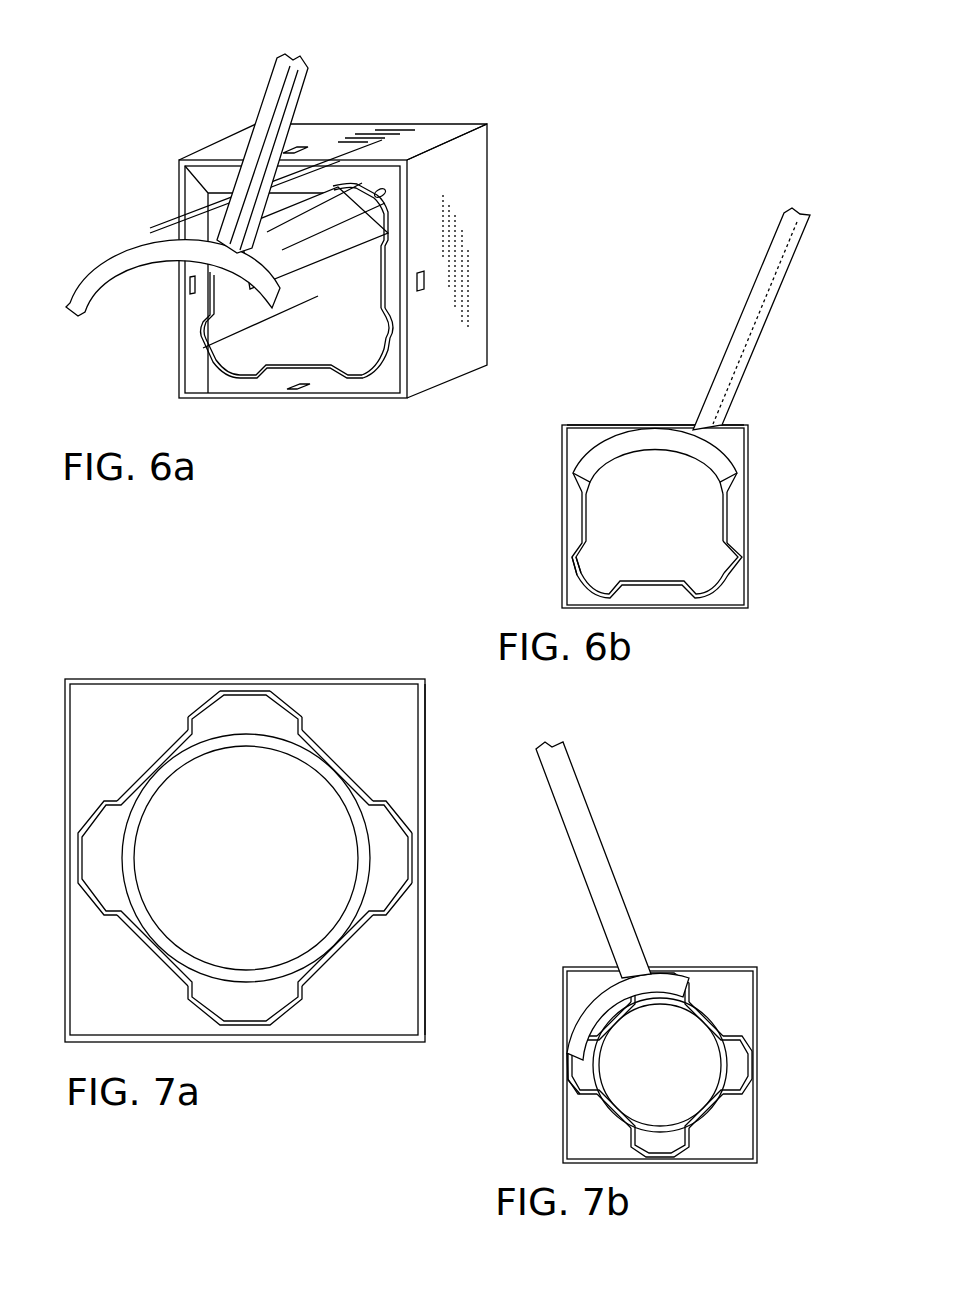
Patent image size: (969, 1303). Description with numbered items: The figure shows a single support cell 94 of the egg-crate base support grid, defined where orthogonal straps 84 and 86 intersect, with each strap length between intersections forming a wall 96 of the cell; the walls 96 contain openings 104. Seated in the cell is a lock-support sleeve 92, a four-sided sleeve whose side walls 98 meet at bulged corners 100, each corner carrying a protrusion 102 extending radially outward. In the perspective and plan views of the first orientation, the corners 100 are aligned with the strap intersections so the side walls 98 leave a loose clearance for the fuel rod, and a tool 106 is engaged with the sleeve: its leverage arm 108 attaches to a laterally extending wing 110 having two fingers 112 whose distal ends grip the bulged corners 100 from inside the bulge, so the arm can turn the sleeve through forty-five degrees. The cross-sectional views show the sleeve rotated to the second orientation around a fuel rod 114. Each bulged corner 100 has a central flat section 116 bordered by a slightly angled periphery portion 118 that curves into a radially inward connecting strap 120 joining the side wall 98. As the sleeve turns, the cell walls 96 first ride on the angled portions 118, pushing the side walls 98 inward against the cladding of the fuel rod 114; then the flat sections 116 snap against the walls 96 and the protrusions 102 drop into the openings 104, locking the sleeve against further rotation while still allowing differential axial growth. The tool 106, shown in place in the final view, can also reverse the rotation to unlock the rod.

In FIG. 6a, the strap 84 is at (353, 253).
In FIG. 6b, the strap 84 is at (622, 485).
In FIG. 7a, the strap 84 is at (289, 860).
In FIG. 6a, the strap 86 is at (363, 133).
In FIG. 6b, the strap 86 is at (621, 424).
In FIG. 6a, the lock-support sleeve 92 is at (254, 323).
In FIG. 6b, the lock-support sleeve 92 is at (656, 535).
In FIG. 7a, the lock-support sleeve 92 is at (294, 818).
In FIG. 7b, the lock-support sleeve 92 is at (662, 1038).
In FIG. 6a, the support cell 94 is at (311, 259).
In FIG. 6b, the support cell 94 is at (656, 408).
In FIG. 7b, the support cell 94 is at (662, 952).
In FIG. 6a, the wall 96 is at (467, 213).
In FIG. 7a, the wall 96 is at (428, 937).
In FIG. 6a, the side wall 98 is at (282, 373).
In FIG. 6b, the side wall 98 is at (726, 526).
In FIG. 7a, the side wall 98 is at (354, 780).
In FIG. 7b, the side wall 98 is at (709, 1001).
In FIG. 6a, the bulged corner 100 is at (369, 370).
In FIG. 6b, the bulged corner 100 is at (580, 574).
In FIG. 7a, the bulged corner 100 is at (419, 869).
In FIG. 7b, the bulged corner 100 is at (755, 1063).
In FIG. 6a, the protrusion 102 is at (387, 197).
In FIG. 6b, the protrusion 102 is at (736, 585).
In FIG. 6a, the opening 104 is at (427, 283).
In FIG. 6a, the tool 106 is at (314, 253).
In FIG. 6b, the tool 106 is at (691, 345).
In FIG. 7b, the tool 106 is at (632, 918).
In FIG. 6a, the leverage arm 108 is at (257, 112).
In FIG. 6b, the leverage arm 108 is at (747, 289).
In FIG. 7b, the leverage arm 108 is at (600, 838).
In FIG. 6a, the laterally extending wing 110 is at (117, 233).
In FIG. 6b, the laterally extending wing 110 is at (655, 455).
In FIG. 7b, the laterally extending wing 110 is at (628, 1033).
In FIG. 6a, the finger 112 is at (301, 265).
In FIG. 7a, the fuel rod 114 is at (303, 753).
In FIG. 7a, the central flat section 116 is at (252, 678).
In FIG. 7a, the angled periphery portion 118 is at (195, 682).
In FIG. 7a, the connecting strap 120 is at (185, 724).